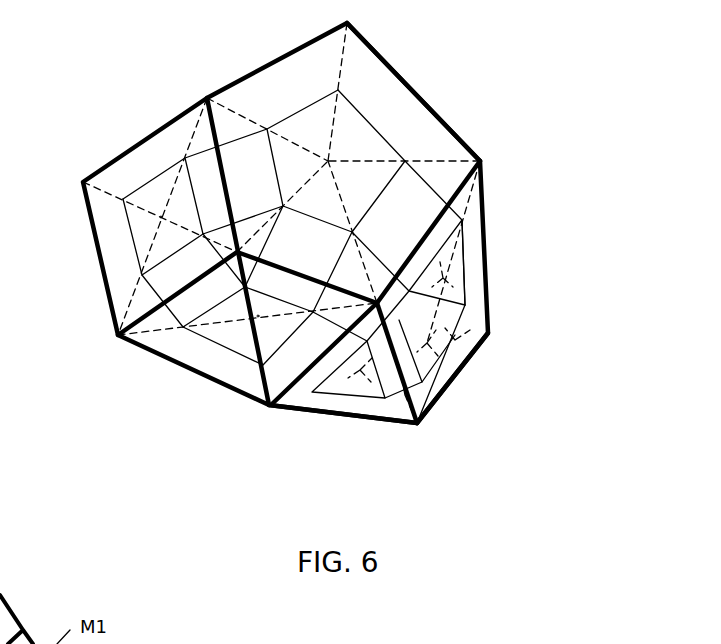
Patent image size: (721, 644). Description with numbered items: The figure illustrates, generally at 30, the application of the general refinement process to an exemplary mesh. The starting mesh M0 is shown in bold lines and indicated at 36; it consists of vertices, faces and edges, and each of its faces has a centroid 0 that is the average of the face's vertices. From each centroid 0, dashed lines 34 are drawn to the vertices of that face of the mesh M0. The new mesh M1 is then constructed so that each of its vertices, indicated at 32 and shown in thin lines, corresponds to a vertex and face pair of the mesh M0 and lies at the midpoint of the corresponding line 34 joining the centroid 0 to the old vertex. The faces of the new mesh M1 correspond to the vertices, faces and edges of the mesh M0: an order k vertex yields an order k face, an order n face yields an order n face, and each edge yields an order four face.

The general refinement construction 30 is at (93, 343).
The vertices of the new mesh 32 is at (467, 270).
The lines connecting vertices and face centroids 34 is at (466, 204).
The old mesh 36 is at (413, 90).
The centroid 0 is at (161, 217).
The mesh M0 is at (458, 372).
The new mesh M1 is at (342, 396).